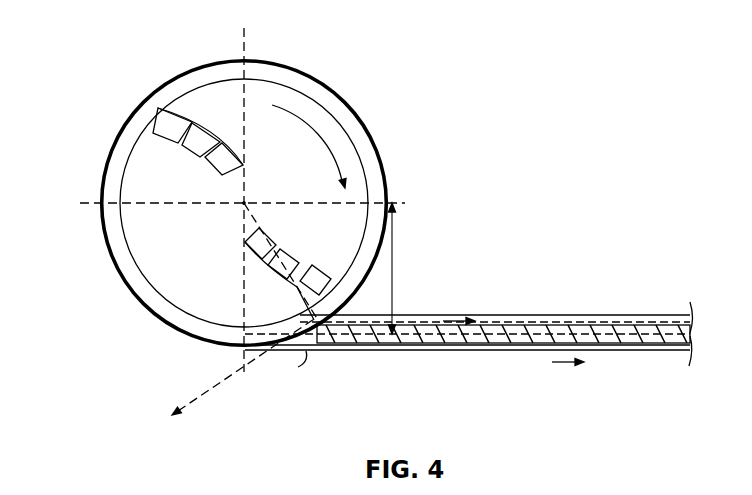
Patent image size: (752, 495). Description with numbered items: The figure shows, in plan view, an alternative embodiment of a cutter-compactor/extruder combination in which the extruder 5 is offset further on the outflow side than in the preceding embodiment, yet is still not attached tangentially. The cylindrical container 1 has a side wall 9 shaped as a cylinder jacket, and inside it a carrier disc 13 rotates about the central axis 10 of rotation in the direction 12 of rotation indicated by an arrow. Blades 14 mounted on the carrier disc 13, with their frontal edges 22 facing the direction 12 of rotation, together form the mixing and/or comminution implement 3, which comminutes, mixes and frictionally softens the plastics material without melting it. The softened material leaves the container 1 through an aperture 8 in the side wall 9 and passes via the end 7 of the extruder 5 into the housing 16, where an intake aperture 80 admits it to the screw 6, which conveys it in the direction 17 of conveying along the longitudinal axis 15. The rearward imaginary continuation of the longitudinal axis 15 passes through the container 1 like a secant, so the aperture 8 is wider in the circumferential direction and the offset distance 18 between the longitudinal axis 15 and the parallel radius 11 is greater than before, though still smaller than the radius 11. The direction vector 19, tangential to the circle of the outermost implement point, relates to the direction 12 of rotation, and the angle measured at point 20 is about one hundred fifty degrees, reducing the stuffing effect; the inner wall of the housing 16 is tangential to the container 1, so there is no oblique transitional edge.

The container 1 is at (140, 40).
The mixing and/or comminution implement 3 is at (161, 271).
The extruder 5 is at (469, 327).
The screw 6 is at (469, 341).
The end 7 is at (314, 324).
The aperture 8 is at (245, 326).
The side wall 9 is at (259, 60).
The axis of rotation 10 is at (246, 203).
The radius 11 is at (394, 202).
The direction of rotation 12 is at (314, 120).
The carrier disc 13 is at (198, 253).
The blades 14 is at (167, 128).
The longitudinal axis 15 is at (567, 330).
The housing 16 is at (638, 346).
The direction of conveying 17 is at (453, 319).
The offset distance 18 is at (394, 268).
The direction vector 19 is at (203, 393).
The point 20 is at (322, 316).
The frontal edges 22 is at (247, 248).
The intake aperture 80 is at (254, 355).